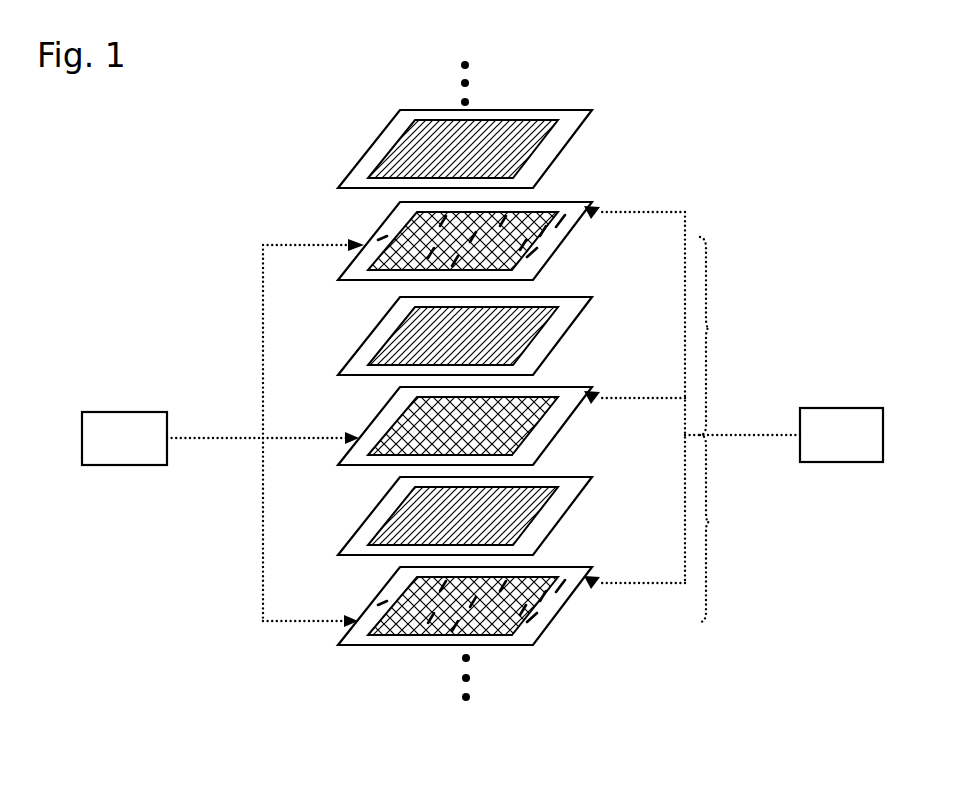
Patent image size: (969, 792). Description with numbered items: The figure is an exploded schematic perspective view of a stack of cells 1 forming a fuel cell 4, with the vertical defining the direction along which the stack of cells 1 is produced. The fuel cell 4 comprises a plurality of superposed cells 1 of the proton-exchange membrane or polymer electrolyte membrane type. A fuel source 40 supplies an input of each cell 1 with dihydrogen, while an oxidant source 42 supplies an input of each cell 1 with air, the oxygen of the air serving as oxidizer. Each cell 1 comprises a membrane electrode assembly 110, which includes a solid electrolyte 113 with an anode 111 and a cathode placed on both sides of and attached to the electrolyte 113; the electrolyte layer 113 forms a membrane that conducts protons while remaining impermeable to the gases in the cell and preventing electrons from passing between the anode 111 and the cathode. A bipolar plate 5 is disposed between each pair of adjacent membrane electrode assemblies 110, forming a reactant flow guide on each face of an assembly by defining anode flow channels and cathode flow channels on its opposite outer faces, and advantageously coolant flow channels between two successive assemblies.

The cell 1 is at (515, 369).
The fuel cell 4 is at (552, 363).
The bipolar plate 5 is at (570, 240).
The fuel source 40 is at (109, 451).
The oxidant source 42 is at (826, 449).
The membrane electrode assembly 110 is at (481, 324).
The anode 111 is at (392, 148).
The solid electrolyte 113 is at (380, 150).